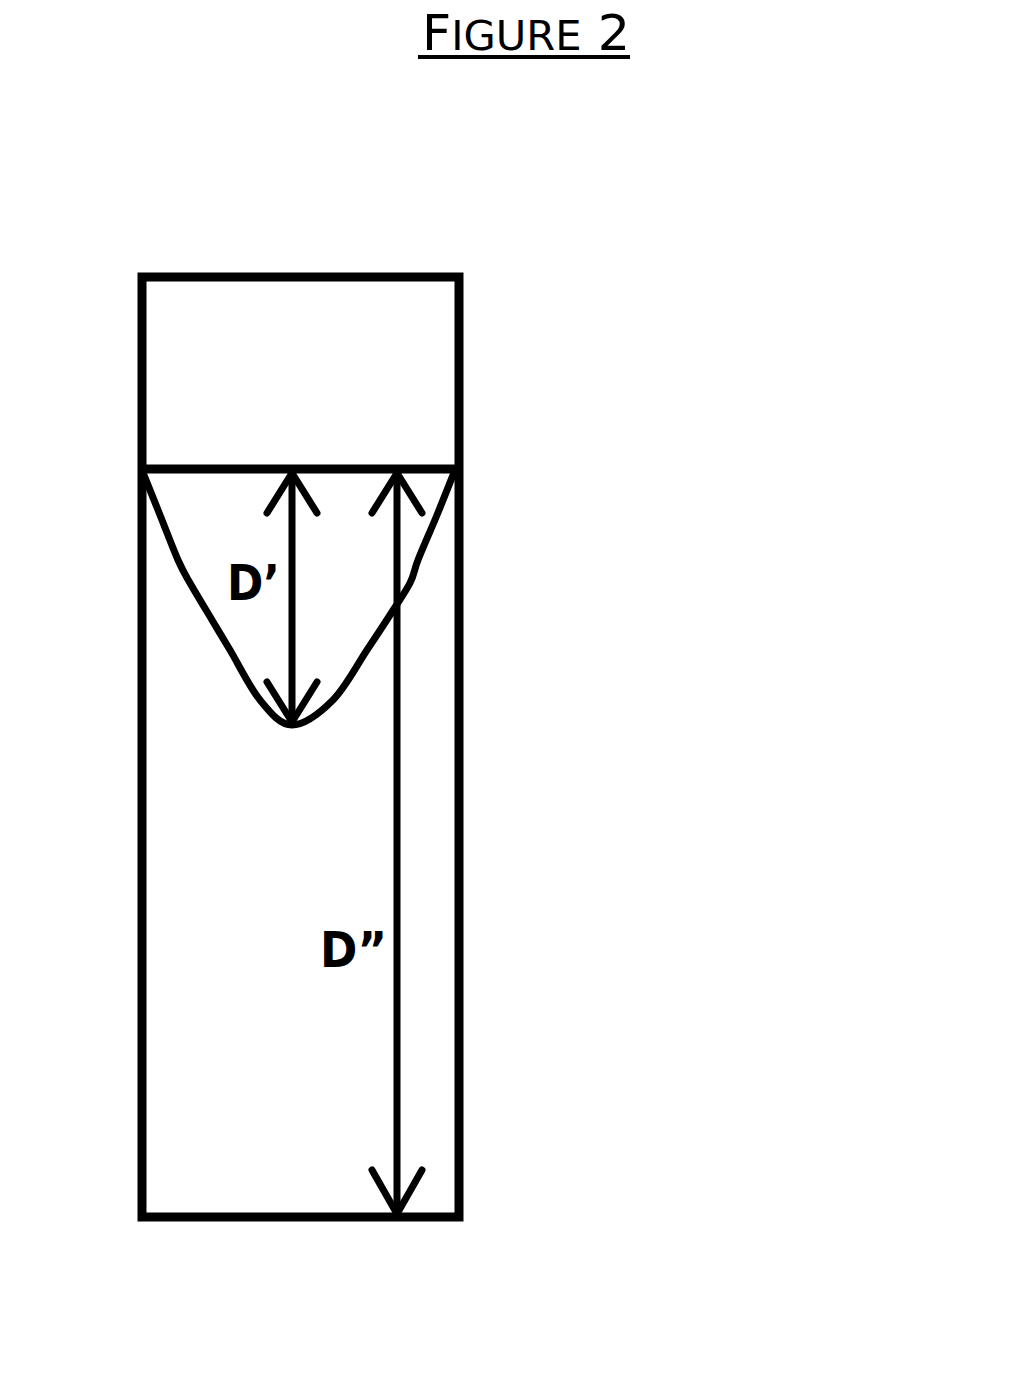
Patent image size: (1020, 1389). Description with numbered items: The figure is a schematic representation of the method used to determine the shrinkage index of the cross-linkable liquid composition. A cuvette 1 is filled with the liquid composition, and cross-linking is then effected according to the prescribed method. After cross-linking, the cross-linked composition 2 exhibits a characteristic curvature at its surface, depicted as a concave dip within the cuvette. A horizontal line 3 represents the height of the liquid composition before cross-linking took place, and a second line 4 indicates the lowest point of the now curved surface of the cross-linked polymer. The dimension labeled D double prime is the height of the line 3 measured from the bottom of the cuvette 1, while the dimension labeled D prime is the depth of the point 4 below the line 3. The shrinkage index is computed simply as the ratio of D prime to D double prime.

The cuvette 1 is at (410, 382).
The cross-linked composition 2 is at (209, 1145).
The line representing height of liquid composition prior to cross-linking 3 is at (495, 468).
The line indicating lowest point of curved surface 4 is at (348, 728).